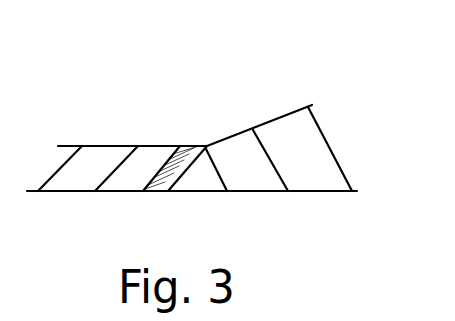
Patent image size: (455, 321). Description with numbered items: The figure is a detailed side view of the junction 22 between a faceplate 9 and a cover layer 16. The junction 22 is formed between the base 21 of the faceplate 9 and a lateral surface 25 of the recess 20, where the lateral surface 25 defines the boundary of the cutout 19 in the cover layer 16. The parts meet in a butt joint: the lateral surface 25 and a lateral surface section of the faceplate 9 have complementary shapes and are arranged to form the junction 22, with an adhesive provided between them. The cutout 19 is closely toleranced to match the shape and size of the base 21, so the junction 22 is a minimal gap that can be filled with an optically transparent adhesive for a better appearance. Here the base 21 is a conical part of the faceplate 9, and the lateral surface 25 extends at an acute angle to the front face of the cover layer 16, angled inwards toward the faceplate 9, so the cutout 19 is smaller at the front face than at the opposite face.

The junction 22 is at (96, 74).
The cover layer 16 is at (82, 173).
The cutout 19 is at (170, 121).
The recess 20 is at (165, 147).
The base 21 is at (238, 152).
The faceplate 9 is at (329, 144).
The lateral surface 25 is at (156, 194).